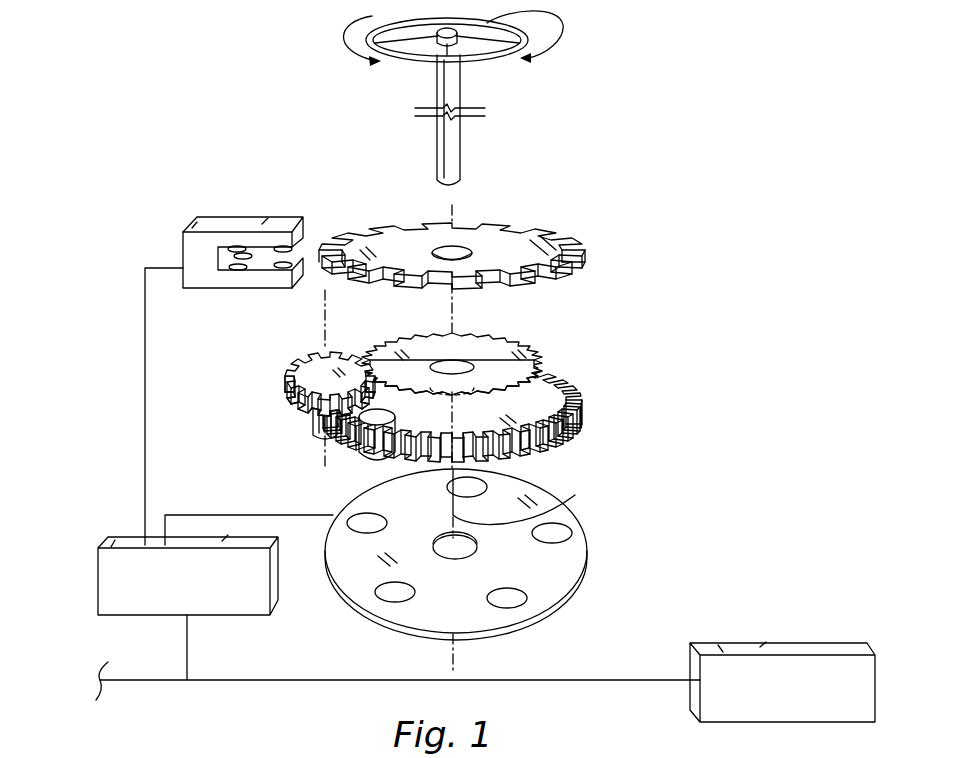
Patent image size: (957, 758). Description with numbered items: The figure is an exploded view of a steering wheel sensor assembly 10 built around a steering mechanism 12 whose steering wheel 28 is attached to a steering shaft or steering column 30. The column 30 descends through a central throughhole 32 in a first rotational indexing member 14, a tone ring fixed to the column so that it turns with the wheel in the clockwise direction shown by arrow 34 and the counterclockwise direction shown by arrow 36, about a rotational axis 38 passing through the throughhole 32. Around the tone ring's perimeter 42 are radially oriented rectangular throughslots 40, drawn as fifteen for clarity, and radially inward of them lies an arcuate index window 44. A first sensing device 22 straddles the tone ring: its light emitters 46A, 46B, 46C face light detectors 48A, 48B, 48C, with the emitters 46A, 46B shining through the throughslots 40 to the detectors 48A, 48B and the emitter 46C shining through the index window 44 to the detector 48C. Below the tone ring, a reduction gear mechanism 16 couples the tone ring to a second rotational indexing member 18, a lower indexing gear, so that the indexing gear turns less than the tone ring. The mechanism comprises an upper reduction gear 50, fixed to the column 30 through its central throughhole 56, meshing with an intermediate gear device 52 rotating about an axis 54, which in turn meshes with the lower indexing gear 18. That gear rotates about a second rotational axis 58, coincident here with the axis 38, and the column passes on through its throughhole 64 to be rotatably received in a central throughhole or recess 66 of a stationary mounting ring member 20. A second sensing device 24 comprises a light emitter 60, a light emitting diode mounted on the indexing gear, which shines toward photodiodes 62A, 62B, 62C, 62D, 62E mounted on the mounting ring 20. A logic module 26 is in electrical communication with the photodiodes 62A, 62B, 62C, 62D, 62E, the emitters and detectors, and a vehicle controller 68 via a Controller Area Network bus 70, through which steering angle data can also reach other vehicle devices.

The steering wheel sensor assembly 10 is at (136, 106).
The steering mechanism 12 is at (556, 97).
The first rotational indexing member 14 is at (473, 252).
The reduction gear mechanism 16 is at (425, 393).
The second rotational indexing member 18 is at (455, 429).
The mounting ring member 20 is at (472, 565).
The first sensing device 22 is at (220, 345).
The second sensing device 24 is at (299, 382).
The logic module 26 is at (98, 578).
The steering wheel 28 is at (520, 27).
The steering shaft or steering column 30 is at (462, 156).
The central throughhole 32 is at (436, 250).
The arrow 34 is at (566, 44).
The arrow 36 is at (337, 35).
The rotational axis 38 is at (453, 206).
The throughslots 40 is at (555, 282).
The perimeter 42 is at (515, 296).
The index window 44 is at (548, 236).
The light emitter 46A is at (235, 246).
The light emitter 46B is at (243, 252).
The light emitter 46C is at (283, 246).
The light detector 48A is at (238, 270).
The light detector 48B is at (275, 268).
The light detector 48C is at (290, 262).
The upper reduction gear 50 is at (452, 347).
The intermediate gear device 52 is at (274, 401).
The axis 54 is at (326, 458).
The central throughhole 56 is at (466, 362).
The second rotational axis 58 is at (572, 498).
The light emitter 60 is at (385, 462).
The photodiode 62A is at (358, 528).
The photodiode 62B is at (490, 488).
The photodiode 62C is at (565, 533).
The photodiode 62D is at (518, 600).
The photodiode 62E is at (392, 597).
The throughhole 64 is at (556, 395).
The central throughhole or recess 66 is at (460, 549).
The vehicle controller 68 is at (876, 681).
The Controller Area Network (CAN) bus 70 is at (317, 682).